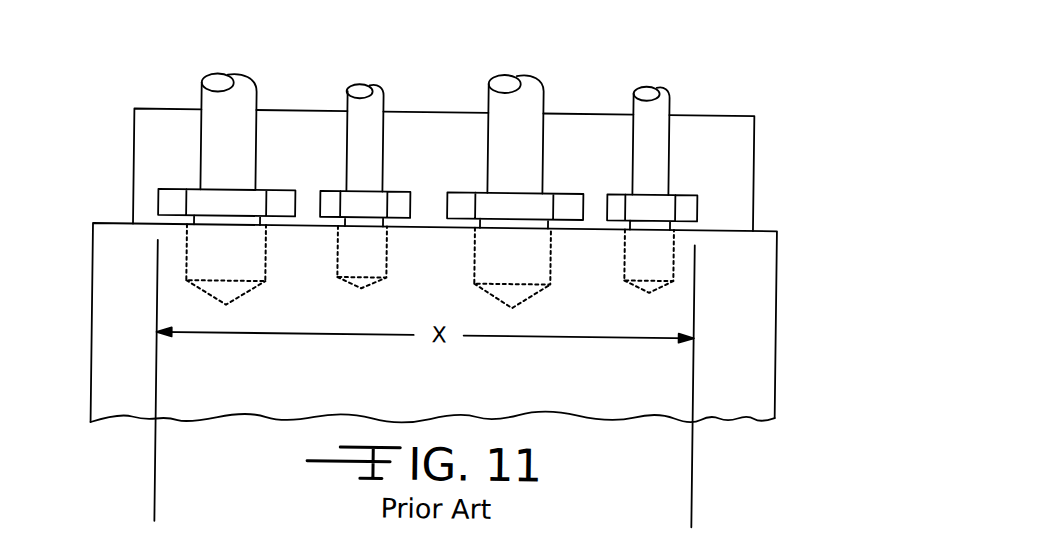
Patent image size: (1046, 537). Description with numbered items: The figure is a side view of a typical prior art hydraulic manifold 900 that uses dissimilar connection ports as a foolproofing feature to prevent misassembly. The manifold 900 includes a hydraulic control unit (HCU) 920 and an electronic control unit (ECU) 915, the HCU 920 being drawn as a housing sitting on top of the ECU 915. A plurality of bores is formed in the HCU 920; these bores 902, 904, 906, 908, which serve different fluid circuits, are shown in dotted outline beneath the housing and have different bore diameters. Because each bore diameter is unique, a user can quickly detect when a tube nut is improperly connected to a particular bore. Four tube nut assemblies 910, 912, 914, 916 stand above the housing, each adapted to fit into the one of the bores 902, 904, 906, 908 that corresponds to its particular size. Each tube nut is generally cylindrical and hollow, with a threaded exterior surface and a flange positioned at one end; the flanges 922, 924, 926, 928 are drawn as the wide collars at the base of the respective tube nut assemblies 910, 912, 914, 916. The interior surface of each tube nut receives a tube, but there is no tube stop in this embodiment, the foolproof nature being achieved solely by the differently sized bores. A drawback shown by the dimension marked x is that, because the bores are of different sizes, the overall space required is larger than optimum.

The prior art hydraulic manifold 900 is at (785, 148).
The bore 902 is at (652, 248).
The bore 904 is at (538, 253).
The bore 906 is at (370, 249).
The bore 908 is at (247, 255).
The tube nut assembly 910 is at (647, 121).
The tube nut assembly 912 is at (513, 113).
The tube nut assembly 914 is at (367, 119).
The tube nut assembly 916 is at (233, 135).
The electronic control unit (ECU) 915 is at (93, 307).
The hydraulic control unit (HCU) 920 is at (133, 160).
The pin flange / standoff 922 is at (687, 205).
The pin flange / standoff 924 is at (572, 198).
The pin flange / standoff 926 is at (398, 196).
The pin flange / standoff 928 is at (280, 200).